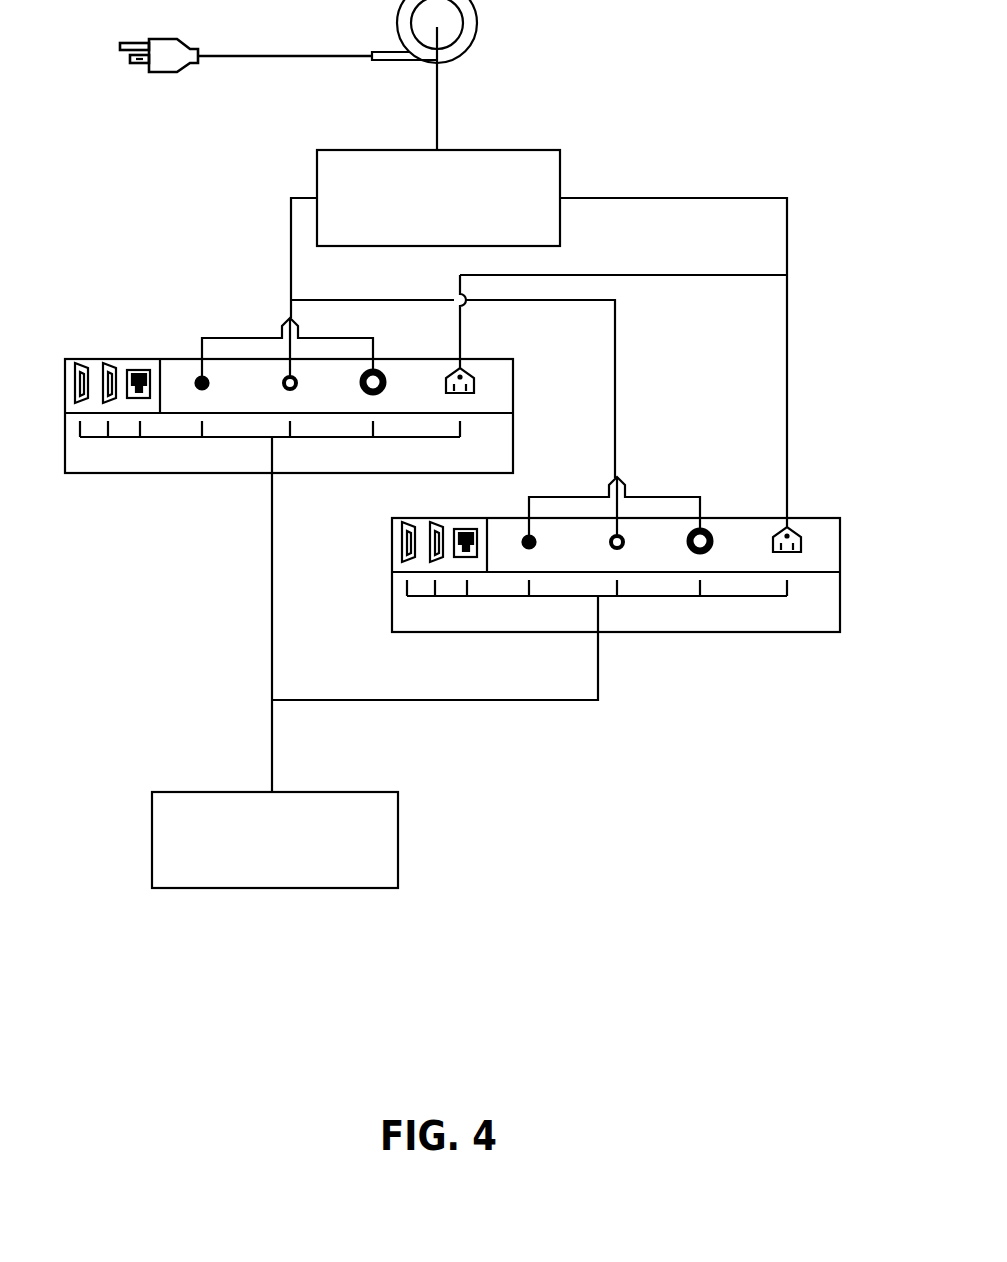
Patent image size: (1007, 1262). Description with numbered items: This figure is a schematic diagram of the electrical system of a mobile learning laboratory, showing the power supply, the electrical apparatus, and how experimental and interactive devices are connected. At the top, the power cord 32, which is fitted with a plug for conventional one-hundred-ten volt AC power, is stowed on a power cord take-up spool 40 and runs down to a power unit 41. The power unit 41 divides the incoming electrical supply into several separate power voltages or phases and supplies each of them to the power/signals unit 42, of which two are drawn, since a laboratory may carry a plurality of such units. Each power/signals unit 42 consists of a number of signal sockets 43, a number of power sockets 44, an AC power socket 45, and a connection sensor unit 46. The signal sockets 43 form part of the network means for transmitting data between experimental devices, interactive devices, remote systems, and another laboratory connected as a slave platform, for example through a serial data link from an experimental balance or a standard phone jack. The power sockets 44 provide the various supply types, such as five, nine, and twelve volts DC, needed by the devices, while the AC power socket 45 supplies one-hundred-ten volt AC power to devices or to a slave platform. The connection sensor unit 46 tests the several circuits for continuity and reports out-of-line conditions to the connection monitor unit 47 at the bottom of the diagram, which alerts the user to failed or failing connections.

The power cord 32 is at (278, 37).
The power cord take-up spool 40 is at (457, 31).
The power unit 41 is at (438, 183).
The power/signals unit 42 is at (264, 398).
The signal sockets 43 is at (138, 372).
The power sockets 44 is at (200, 380).
The AC power socket 45 is at (798, 535).
The connection sensor unit 46 is at (270, 463).
The connection monitor unit 47 is at (253, 839).